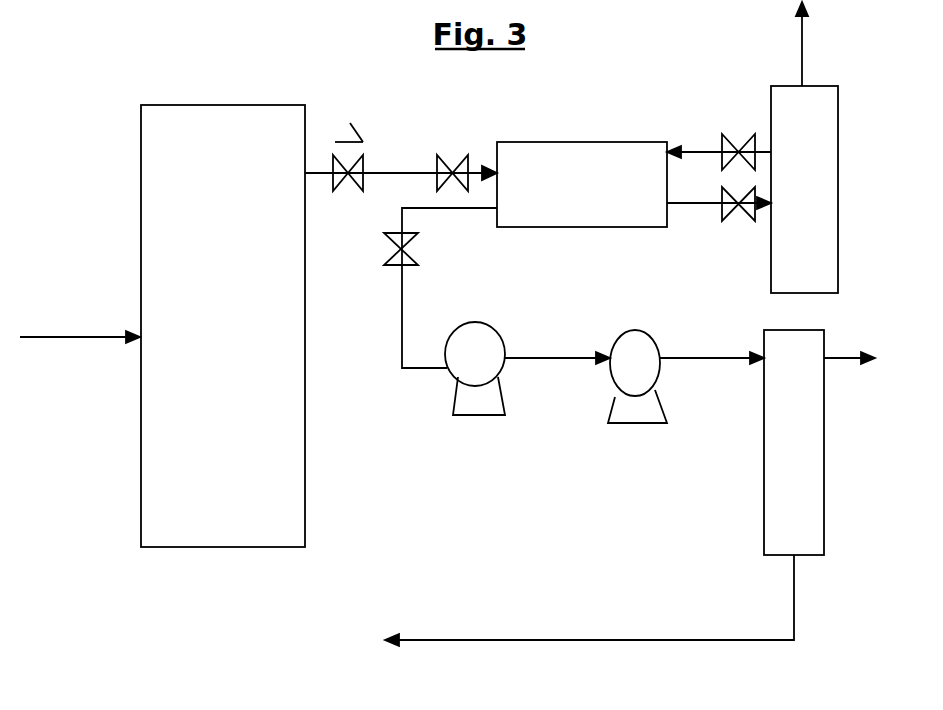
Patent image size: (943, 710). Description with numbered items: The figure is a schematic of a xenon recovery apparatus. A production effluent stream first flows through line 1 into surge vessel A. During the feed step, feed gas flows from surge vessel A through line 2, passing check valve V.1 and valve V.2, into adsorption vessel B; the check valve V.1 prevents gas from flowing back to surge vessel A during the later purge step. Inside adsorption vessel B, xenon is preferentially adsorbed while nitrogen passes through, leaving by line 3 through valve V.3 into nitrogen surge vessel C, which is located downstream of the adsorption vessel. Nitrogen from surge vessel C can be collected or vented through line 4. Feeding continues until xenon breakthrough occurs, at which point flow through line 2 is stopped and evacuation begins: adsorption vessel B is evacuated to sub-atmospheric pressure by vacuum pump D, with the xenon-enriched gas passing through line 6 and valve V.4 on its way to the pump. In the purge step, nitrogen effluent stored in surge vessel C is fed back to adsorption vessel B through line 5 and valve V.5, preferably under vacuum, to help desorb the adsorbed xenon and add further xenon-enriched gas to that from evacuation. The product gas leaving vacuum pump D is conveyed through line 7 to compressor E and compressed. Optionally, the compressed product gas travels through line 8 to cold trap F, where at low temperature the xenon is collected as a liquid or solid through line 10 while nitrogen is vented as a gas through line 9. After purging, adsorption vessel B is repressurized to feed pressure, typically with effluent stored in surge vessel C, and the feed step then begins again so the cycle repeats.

The line 1 is at (80, 310).
The line 2 is at (401, 154).
The line 3 is at (719, 219).
The line 4 is at (811, 44).
The line 5 is at (719, 131).
The line 6 is at (436, 288).
The line 7 is at (557, 329).
The line 8 is at (712, 330).
The line 9 is at (862, 350).
The line 10 is at (589, 600).
The check valve V.1 is at (346, 140).
The valve V.2 is at (452, 156).
The valve V.3 is at (738, 213).
The valve V.4 is at (383, 249).
The valve V.5 is at (738, 140).
The surge vessel A is at (223, 326).
The adsorption vessel B is at (582, 184).
The nitrogen surge vessel C is at (804, 189).
The vacuum pump D is at (475, 368).
The compressor E is at (637, 376).
The cold trap F is at (794, 442).